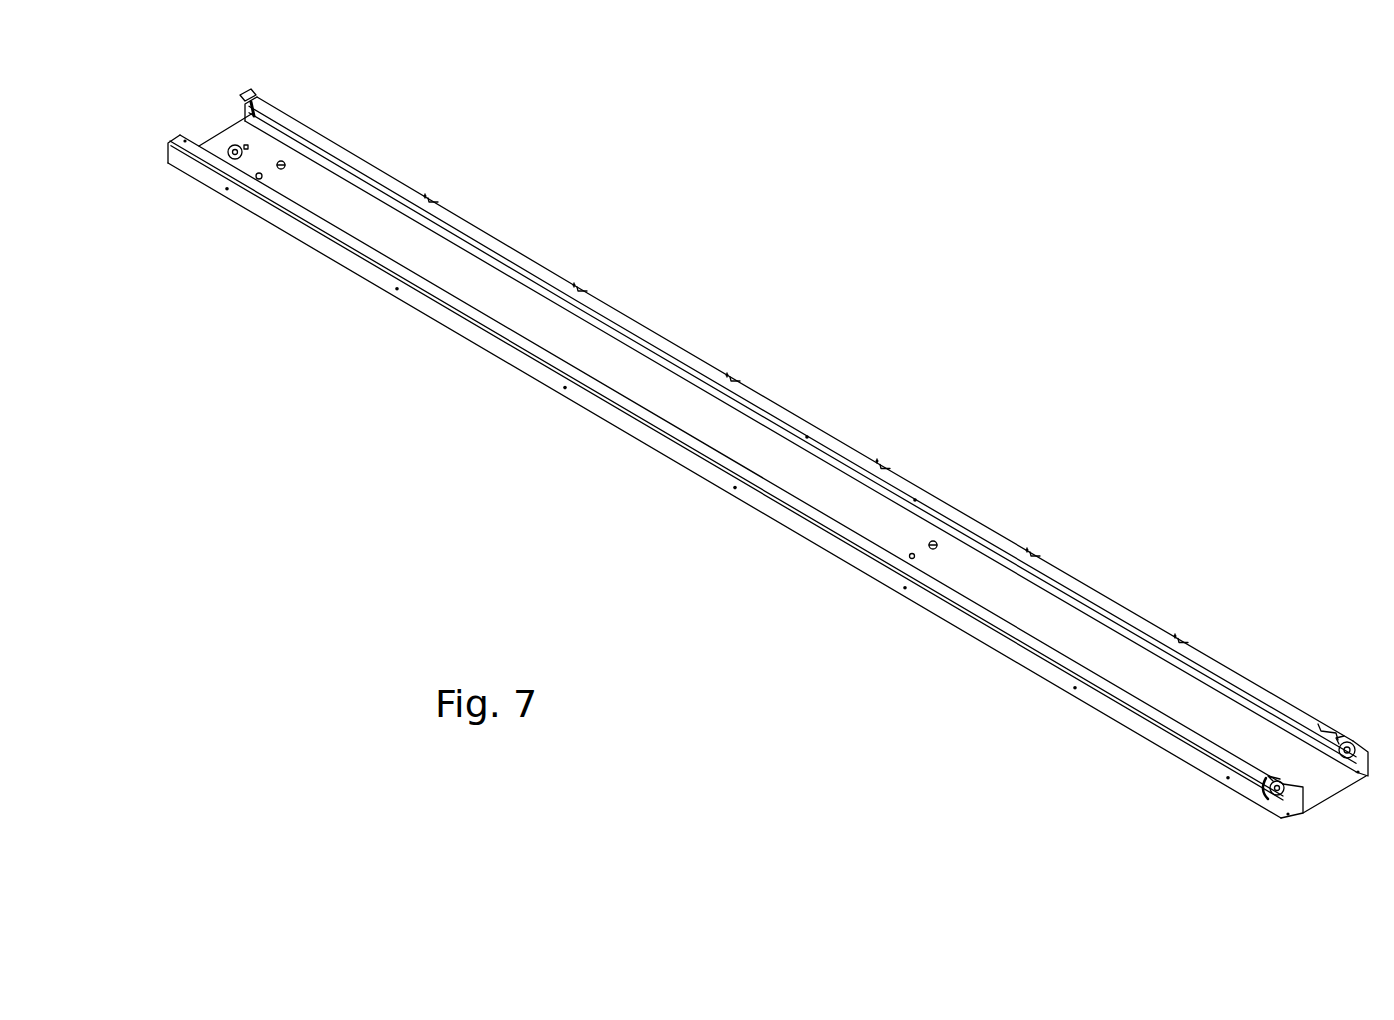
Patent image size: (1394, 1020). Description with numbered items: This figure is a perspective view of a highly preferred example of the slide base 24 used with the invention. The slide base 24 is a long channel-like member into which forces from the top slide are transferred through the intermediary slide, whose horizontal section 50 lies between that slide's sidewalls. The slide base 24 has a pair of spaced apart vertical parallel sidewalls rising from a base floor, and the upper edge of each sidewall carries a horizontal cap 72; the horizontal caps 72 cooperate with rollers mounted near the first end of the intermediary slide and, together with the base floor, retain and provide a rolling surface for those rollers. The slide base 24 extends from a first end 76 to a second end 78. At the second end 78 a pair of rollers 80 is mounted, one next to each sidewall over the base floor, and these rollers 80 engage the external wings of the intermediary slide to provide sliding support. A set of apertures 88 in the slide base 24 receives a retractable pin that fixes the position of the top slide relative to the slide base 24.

The slide base 24 is at (661, 449).
The horizontal section 50 is at (656, 389).
The horizontal cap 72 is at (767, 396).
The first end 76 is at (315, 123).
The second end 78 is at (1308, 715).
The rollers 80 is at (1347, 738).
The apertures 88 is at (578, 287).